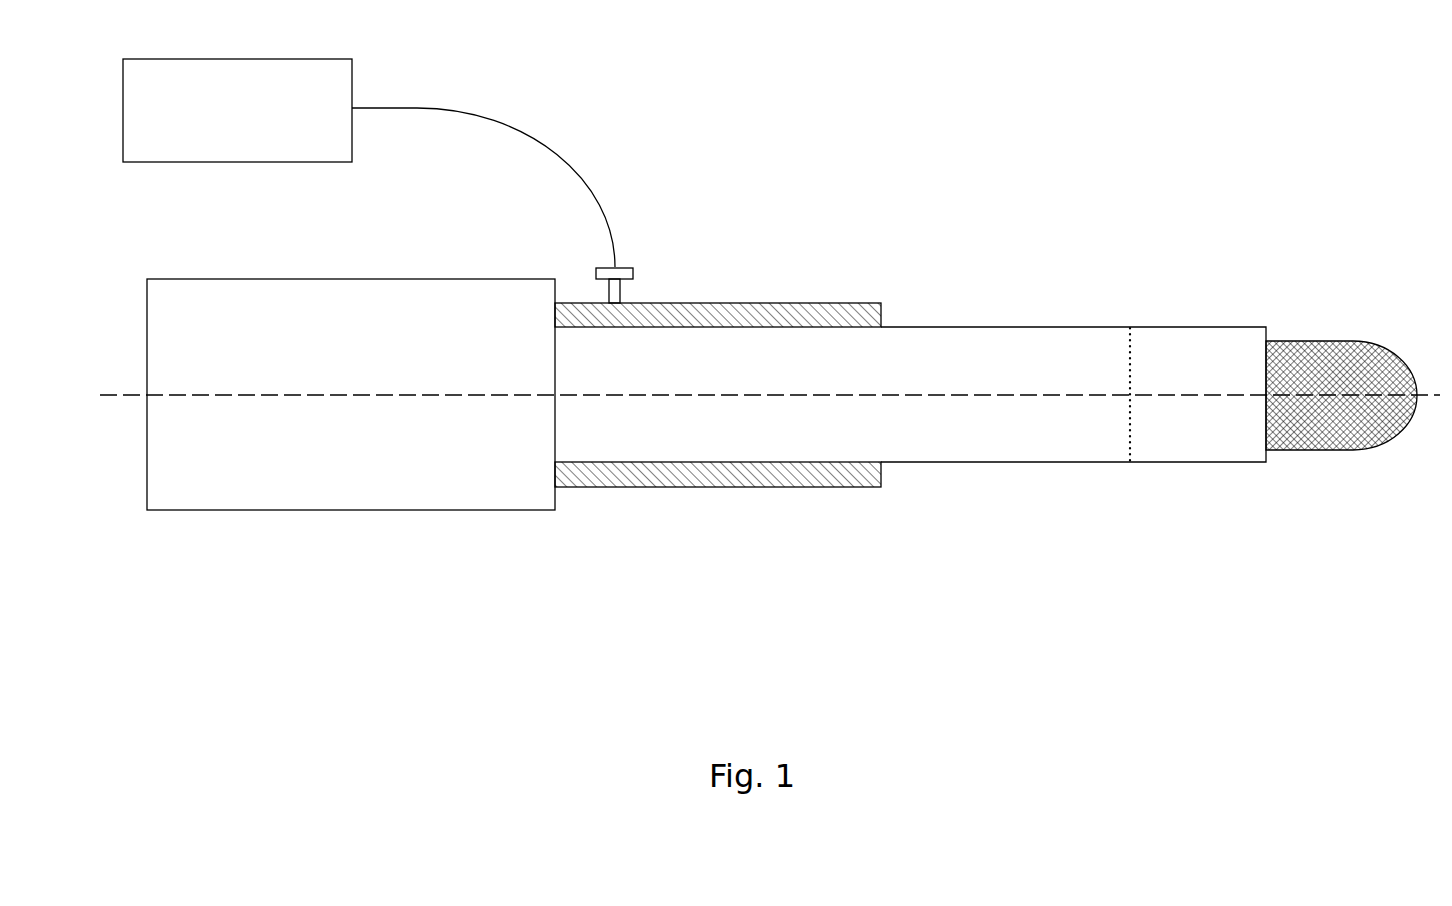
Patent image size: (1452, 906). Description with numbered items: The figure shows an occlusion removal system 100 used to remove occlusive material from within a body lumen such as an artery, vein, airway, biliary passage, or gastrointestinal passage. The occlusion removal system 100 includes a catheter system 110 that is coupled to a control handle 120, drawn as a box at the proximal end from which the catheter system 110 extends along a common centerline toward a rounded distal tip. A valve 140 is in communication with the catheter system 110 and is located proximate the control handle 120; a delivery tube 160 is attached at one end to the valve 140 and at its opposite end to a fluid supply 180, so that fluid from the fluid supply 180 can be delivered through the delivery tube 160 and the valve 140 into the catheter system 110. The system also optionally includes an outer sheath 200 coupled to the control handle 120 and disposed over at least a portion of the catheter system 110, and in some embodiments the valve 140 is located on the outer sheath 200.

The occlusion removal system 100 is at (700, 54).
The catheter system 110 is at (963, 269).
The control handle 120 is at (337, 487).
The valve 140 is at (625, 265).
The delivery tube 160 is at (480, 120).
The fluid supply 180 is at (215, 125).
The outer sheath 200 is at (673, 487).